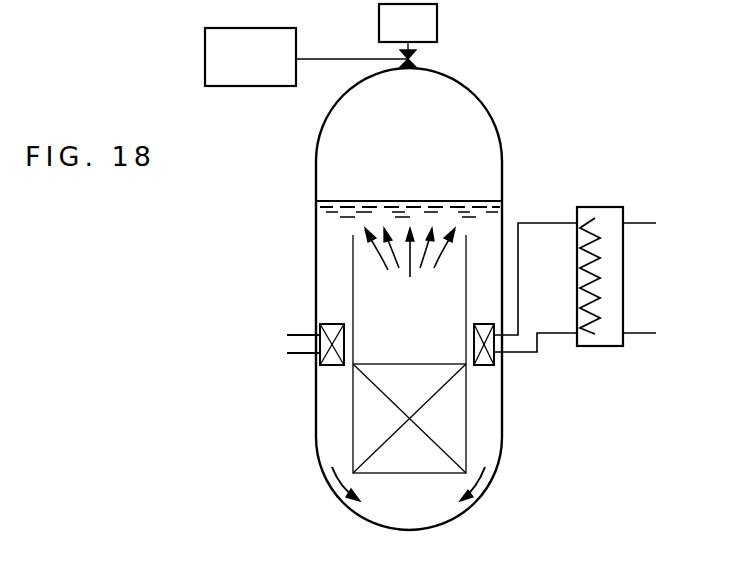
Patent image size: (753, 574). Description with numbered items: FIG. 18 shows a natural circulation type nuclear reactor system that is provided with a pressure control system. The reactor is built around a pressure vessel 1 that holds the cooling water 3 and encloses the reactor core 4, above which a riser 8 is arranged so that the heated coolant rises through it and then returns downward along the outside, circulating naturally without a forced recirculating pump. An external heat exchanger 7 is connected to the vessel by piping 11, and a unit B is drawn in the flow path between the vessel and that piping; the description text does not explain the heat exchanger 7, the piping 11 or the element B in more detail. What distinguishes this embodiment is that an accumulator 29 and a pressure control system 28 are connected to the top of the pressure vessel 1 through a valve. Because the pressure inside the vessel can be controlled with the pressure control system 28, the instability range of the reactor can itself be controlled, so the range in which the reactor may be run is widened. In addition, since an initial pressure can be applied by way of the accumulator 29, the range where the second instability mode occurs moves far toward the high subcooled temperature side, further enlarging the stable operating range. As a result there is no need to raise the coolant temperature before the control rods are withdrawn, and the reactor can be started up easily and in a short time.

The pressure vessel 1 is at (477, 98).
The cooling water 3 is at (413, 270).
The reactor core 4 is at (466, 432).
The heat exchanger 7 is at (608, 213).
The riser 8 is at (466, 263).
The piping 11 is at (552, 329).
The pressure control system 28 is at (296, 32).
The accumulator 29 is at (437, 22).
The pump B is at (483, 324).